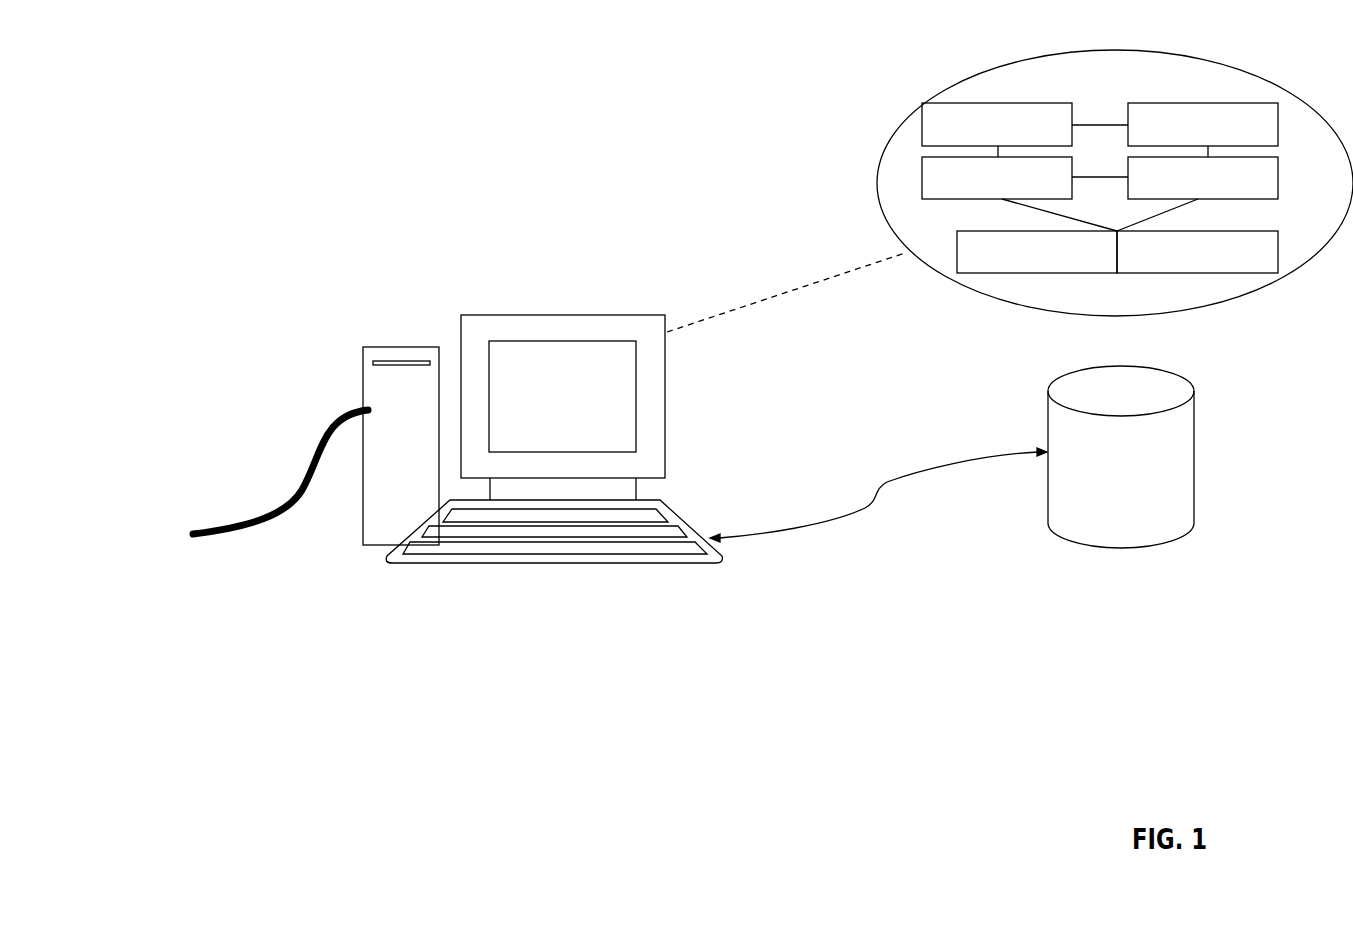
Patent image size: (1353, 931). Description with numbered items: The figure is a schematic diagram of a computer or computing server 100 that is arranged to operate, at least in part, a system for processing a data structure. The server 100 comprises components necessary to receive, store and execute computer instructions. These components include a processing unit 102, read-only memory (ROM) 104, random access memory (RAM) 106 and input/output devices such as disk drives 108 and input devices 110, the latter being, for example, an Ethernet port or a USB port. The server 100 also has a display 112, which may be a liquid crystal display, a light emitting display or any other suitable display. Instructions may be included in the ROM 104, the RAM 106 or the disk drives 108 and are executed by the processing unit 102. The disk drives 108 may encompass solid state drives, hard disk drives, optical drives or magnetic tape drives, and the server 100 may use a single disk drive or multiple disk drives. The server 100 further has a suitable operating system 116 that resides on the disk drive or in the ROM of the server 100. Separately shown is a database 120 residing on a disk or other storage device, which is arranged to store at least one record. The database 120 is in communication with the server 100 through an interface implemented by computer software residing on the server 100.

The computing server 100 is at (457, 461).
The display 112 is at (569, 305).
The processing unit 102 is at (997, 124).
The read-only memory (ROM) 104 is at (1203, 124).
The random access memory (RAM) 106 is at (997, 178).
The disk drives 108 is at (1203, 178).
The input devices 110 is at (1037, 252).
The operating system 116 is at (1197, 252).
The database 120 is at (1121, 457).